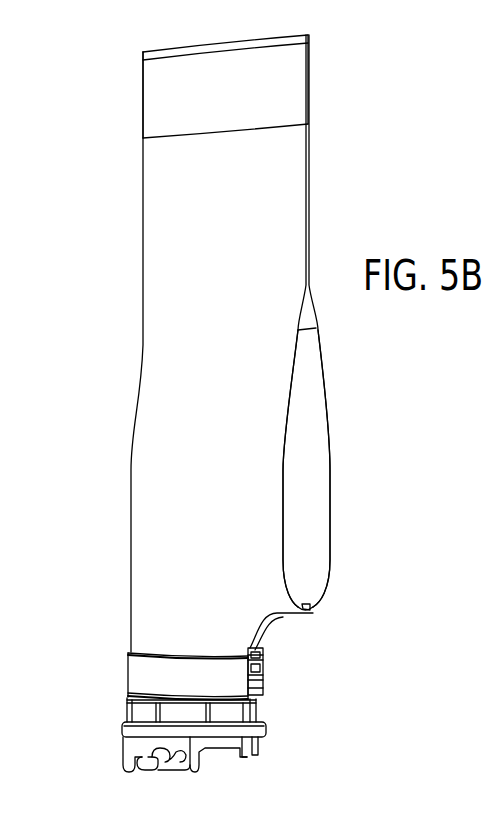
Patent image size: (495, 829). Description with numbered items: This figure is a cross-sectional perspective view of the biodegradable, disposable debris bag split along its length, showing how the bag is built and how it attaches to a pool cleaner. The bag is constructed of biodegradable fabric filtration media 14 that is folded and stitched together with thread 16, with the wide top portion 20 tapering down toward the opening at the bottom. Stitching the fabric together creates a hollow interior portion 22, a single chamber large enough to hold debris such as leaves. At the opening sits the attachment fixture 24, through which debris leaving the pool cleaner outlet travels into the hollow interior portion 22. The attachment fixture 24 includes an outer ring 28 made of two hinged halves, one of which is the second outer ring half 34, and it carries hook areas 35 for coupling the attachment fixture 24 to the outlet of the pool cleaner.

The biodegradable fabric filtration media 14 is at (160, 175).
The thread 16 is at (309, 38).
The top portion 20 is at (196, 95).
The hollow interior portion 22 is at (310, 412).
The attachment fixture 24 is at (285, 712).
The outer ring 28 is at (138, 670).
The second outer ring half 34 is at (170, 668).
The hook areas 35 is at (160, 768).